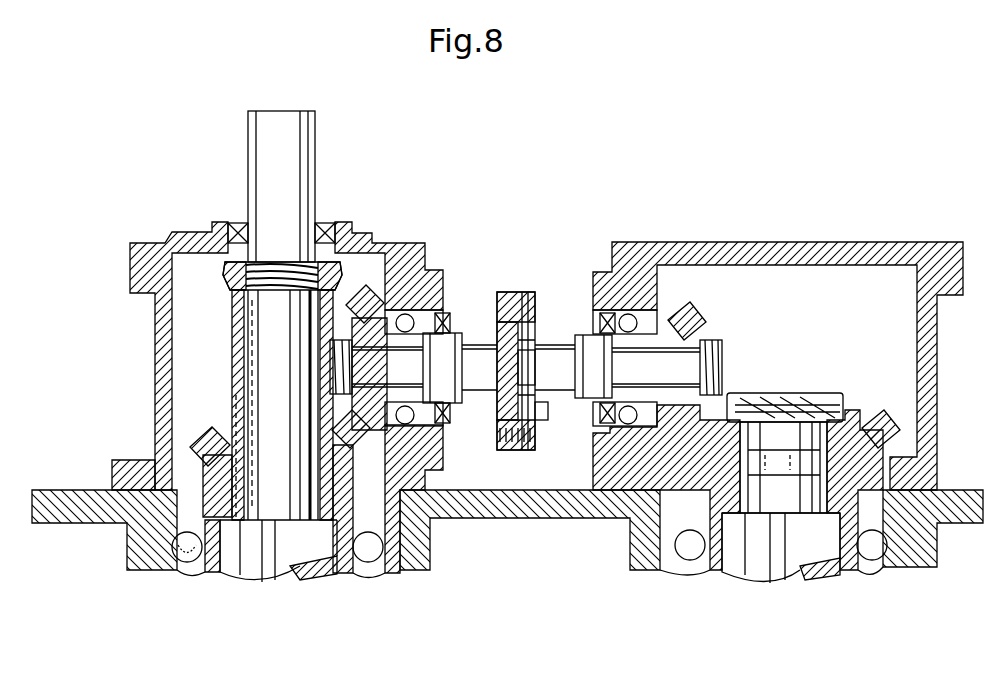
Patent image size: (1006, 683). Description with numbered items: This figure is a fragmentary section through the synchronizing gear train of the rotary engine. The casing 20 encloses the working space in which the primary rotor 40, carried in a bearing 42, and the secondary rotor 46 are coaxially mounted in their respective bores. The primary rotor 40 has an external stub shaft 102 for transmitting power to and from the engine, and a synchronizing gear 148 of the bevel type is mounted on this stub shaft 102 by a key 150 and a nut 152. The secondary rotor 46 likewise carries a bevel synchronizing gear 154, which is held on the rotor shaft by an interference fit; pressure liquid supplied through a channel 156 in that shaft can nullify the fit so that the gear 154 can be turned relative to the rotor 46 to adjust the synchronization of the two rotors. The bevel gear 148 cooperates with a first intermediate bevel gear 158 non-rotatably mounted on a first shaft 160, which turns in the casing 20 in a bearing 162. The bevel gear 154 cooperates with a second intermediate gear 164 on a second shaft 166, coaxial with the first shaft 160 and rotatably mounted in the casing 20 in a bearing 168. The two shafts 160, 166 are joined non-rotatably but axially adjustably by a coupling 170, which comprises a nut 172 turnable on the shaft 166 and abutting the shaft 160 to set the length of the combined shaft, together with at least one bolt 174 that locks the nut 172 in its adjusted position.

The casing 20 is at (525, 505).
The primary rotor 40 is at (252, 560).
The bearing 42 is at (187, 565).
The secondary rotor 46 is at (760, 560).
The stub shaft 102 is at (290, 150).
The synchronizing gear 148 is at (213, 440).
The key 150 is at (233, 420).
The nut 152 is at (233, 272).
The synchronizing gear 154 is at (886, 415).
The channel 156 is at (790, 403).
The first intermediate bevel gear 158 is at (362, 300).
The first shaft 160 is at (448, 390).
The bearing 162 is at (410, 320).
The second intermediate gear 164 is at (688, 322).
The second shaft 166 is at (580, 338).
The bearing 168 is at (645, 305).
The coupling 170 is at (500, 300).
The nut 172 is at (515, 448).
The bolt 174 is at (543, 422).